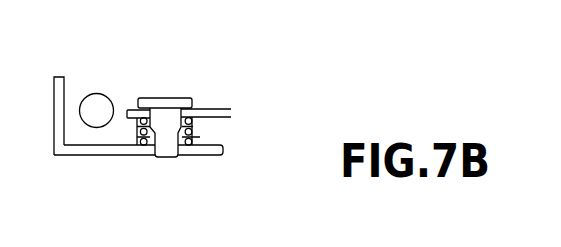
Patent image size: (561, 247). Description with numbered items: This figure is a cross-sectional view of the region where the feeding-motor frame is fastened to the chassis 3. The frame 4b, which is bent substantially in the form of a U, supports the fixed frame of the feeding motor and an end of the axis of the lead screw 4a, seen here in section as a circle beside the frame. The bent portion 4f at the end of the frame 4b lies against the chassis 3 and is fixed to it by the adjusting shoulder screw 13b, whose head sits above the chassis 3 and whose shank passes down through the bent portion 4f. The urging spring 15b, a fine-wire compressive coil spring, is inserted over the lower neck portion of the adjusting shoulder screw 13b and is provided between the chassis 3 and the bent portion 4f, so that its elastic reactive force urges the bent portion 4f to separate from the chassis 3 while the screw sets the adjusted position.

The frame 4b is at (58, 77).
The bent portion 4f is at (93, 155).
The lead screw 4a is at (95, 93).
The adjusting shoulder screw 13b is at (166, 98).
The chassis 3 is at (218, 109).
The urging spring 15b is at (193, 127).